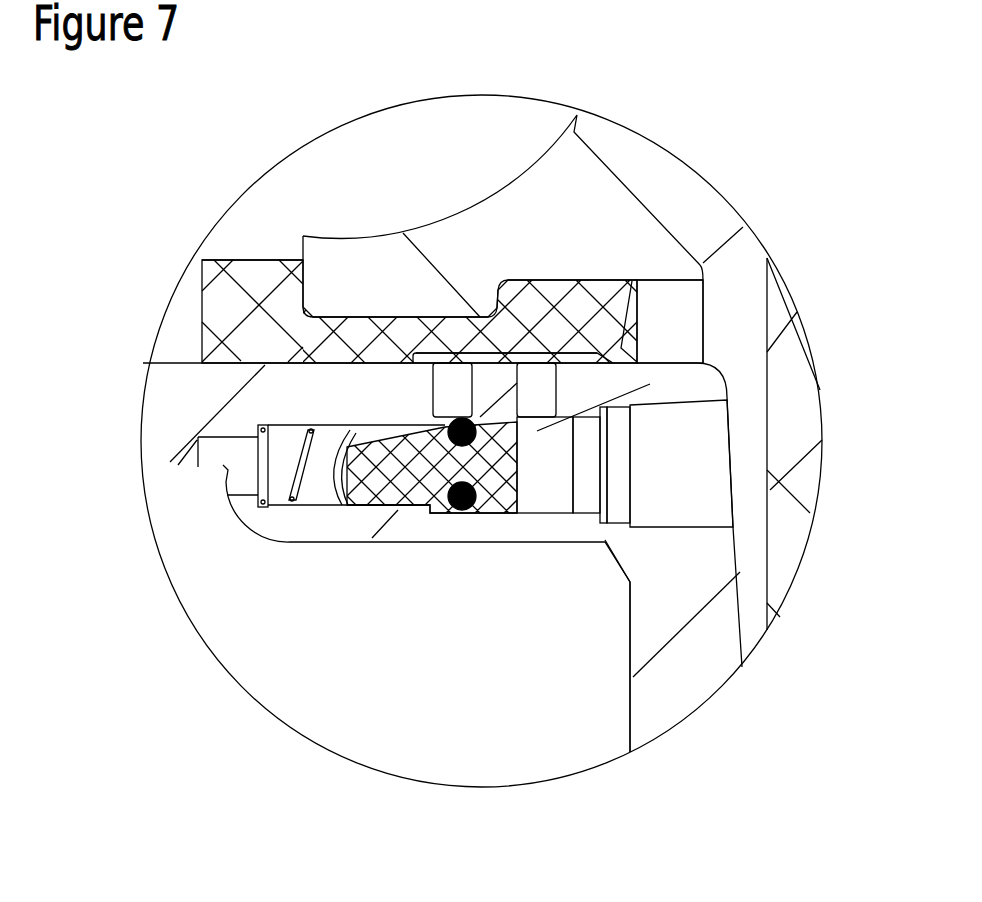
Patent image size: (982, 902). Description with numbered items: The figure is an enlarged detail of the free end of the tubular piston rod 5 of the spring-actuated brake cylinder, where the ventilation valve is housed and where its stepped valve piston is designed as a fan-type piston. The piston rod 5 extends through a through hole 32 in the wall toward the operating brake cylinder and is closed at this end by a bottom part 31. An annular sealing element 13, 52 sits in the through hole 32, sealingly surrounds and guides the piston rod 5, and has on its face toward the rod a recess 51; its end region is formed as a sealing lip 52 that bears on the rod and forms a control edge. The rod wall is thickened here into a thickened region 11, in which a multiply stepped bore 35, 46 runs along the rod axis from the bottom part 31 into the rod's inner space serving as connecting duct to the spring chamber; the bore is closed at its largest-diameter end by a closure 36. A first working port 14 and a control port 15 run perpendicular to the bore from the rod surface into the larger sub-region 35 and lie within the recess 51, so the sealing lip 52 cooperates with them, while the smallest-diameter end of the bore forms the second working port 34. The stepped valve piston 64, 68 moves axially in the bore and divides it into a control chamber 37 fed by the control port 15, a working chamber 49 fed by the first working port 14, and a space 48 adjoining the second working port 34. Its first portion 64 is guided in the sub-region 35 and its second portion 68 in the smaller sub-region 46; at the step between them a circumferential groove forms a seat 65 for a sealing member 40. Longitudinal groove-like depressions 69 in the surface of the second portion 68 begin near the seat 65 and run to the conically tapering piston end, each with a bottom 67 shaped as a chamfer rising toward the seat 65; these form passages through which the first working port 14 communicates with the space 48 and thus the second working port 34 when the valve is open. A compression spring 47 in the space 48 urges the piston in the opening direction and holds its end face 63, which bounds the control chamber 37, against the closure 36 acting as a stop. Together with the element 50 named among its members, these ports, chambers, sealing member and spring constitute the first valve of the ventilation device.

The piston rod 5 is at (383, 535).
The thickened region 11 is at (432, 679).
The annular sealing element 13 is at (413, 288).
The first working port 14 is at (405, 240).
The control port 15 is at (541, 237).
The bottom part 31 is at (699, 691).
The through hole 32 is at (562, 372).
The second working port 34 is at (158, 457).
The sub-region of stepped bore having the larger diameter 35 is at (714, 517).
The closure 36 is at (757, 450).
The control chamber 37 is at (692, 398).
The sealing member 40 is at (568, 627).
The sub-region of stepped bore having the smaller diameter 46 is at (241, 580).
The compression spring 47 is at (203, 526).
The space 48 is at (260, 490).
The working chamber 49 is at (421, 636).
The first valve component 50 is at (427, 227).
The recess 51 is at (506, 199).
The sealing lip 52 is at (722, 287).
The end face 63 is at (847, 560).
The first portion of valve piston 64 is at (681, 629).
The seat 65 is at (656, 649).
The bottom 67 is at (215, 237).
The second portion of valve piston 68 is at (338, 652).
The groove-like depression 69 is at (435, 219).